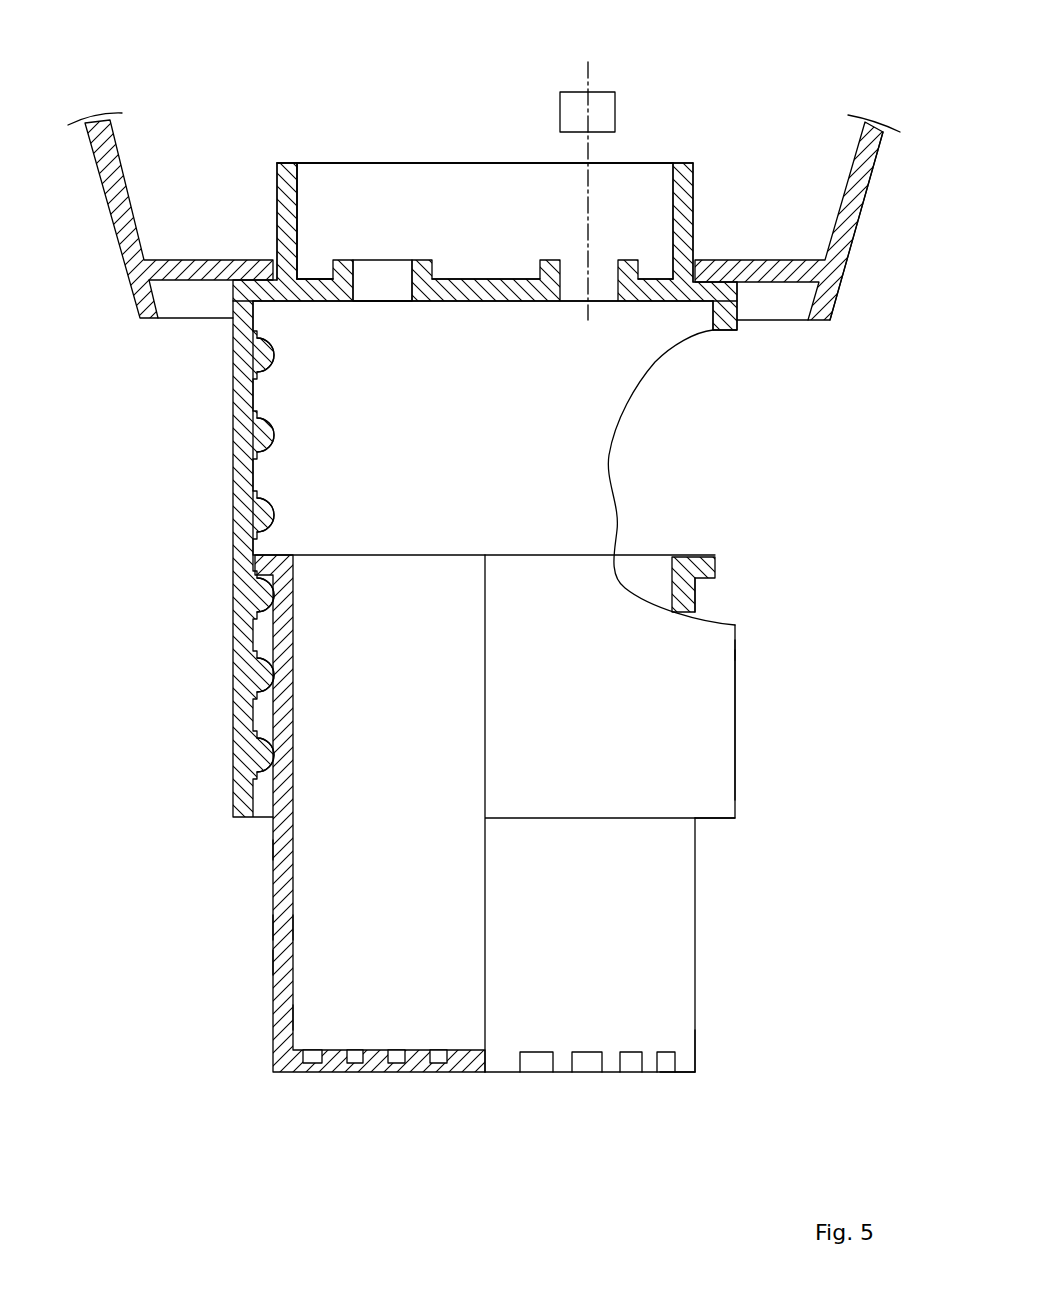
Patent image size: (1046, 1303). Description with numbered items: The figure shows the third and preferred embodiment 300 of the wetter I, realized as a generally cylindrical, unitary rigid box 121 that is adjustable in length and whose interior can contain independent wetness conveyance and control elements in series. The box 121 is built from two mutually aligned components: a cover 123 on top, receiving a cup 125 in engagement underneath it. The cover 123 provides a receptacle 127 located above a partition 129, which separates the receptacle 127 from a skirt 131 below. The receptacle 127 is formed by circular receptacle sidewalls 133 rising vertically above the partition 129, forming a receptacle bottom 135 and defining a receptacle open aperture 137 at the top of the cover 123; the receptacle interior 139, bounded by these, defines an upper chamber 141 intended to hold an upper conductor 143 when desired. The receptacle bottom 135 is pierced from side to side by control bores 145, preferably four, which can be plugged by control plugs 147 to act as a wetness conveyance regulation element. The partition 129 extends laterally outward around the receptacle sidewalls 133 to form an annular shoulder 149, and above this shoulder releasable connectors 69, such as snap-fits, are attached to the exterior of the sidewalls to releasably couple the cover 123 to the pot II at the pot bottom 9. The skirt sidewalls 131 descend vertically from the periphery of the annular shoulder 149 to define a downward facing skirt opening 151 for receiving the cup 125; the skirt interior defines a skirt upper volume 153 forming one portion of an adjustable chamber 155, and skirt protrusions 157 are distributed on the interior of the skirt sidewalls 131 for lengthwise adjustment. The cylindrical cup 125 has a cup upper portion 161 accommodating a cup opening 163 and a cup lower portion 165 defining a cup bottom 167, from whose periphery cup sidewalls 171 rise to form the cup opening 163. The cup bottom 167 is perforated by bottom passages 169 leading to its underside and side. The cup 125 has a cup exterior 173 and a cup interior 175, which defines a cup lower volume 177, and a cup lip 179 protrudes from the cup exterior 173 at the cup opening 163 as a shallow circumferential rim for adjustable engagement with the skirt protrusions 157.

The pot bottom 9 is at (757, 282).
The releasable connectors 69 is at (273, 258).
The box 121 is at (748, 718).
The cover 123 is at (242, 632).
The cup 125 is at (697, 982).
The receptacle 127 is at (695, 185).
The partition 129 is at (467, 278).
The skirt 131 is at (693, 780).
The receptacle sidewalls 133 is at (277, 180).
The receptacle bottom 135 is at (320, 278).
The receptacle open aperture 137 is at (310, 160).
The receptacle interior 139 is at (330, 182).
The upper chamber 141 is at (431, 185).
The upper conductor 143 is at (485, 221).
The control bores 145 is at (378, 287).
The control plugs 147 is at (603, 105).
The annular shoulder 149 is at (723, 282).
The skirt opening 151 is at (708, 823).
The skirt upper volume 153 is at (297, 400).
The adjustable chamber 155 is at (484, 428).
The skirt protrusions 157 is at (280, 597).
The cup upper portion 161 is at (703, 602).
The cup opening 163 is at (640, 530).
The cup lower portion 165 is at (700, 1048).
The cup bottom 167 is at (682, 1072).
The bottom passages 169 is at (353, 1063).
The cup sidewalls 171 is at (273, 850).
The cup exterior 173 is at (215, 961).
The cup interior 175 is at (317, 927).
The cup lower volume 177 is at (357, 1017).
The cup lip 179 is at (713, 568).
The third embodiment 300 is at (823, 425).
The wetter I is at (795, 655).
The pot II is at (870, 185).